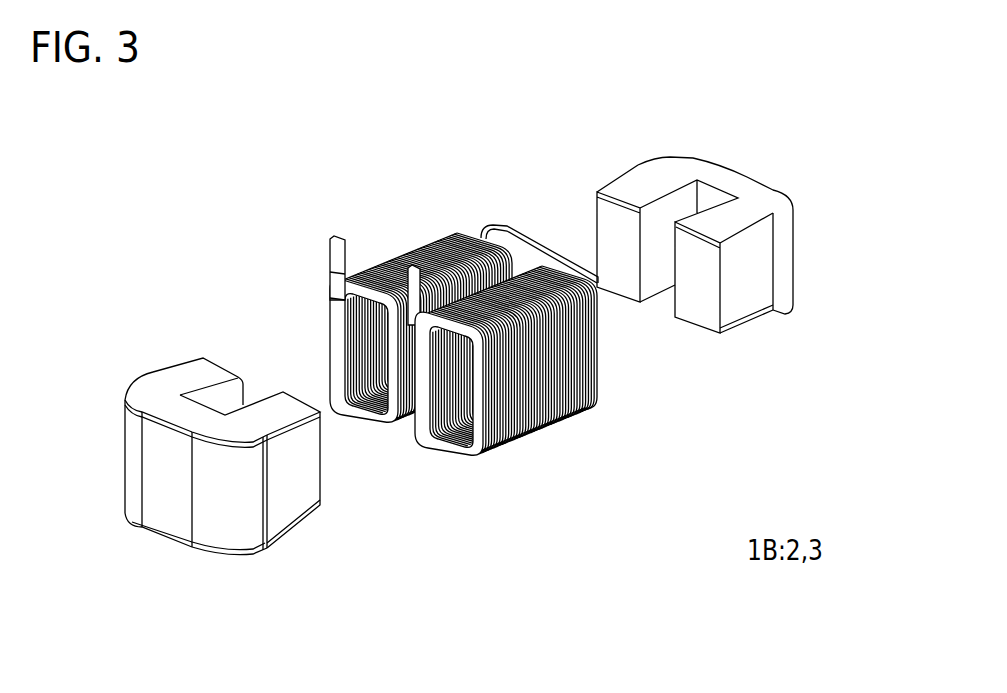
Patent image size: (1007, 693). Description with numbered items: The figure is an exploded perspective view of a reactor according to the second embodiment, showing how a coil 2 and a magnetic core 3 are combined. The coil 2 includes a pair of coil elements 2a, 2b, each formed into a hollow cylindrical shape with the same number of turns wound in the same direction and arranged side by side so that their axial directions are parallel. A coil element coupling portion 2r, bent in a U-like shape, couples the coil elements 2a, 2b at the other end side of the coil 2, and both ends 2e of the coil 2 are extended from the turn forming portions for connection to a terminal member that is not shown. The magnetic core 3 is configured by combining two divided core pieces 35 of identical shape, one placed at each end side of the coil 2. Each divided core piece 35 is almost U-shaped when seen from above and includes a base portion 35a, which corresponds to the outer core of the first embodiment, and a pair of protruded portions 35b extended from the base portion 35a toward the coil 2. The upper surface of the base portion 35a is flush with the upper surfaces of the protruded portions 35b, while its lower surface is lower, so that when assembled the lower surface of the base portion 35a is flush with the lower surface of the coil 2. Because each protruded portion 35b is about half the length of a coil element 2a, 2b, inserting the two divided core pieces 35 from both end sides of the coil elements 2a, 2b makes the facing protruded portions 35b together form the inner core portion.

The coil 2 is at (432, 327).
The coil element 2a is at (387, 260).
The coil element 2b is at (537, 437).
The coil element coupling portion 2r is at (483, 227).
The end of the coil 2e is at (337, 245).
The magnetic core 3 is at (429, 335).
The divided core piece 35 is at (159, 364).
The base portion 35a is at (148, 443).
The protruded portion 35b is at (200, 360).